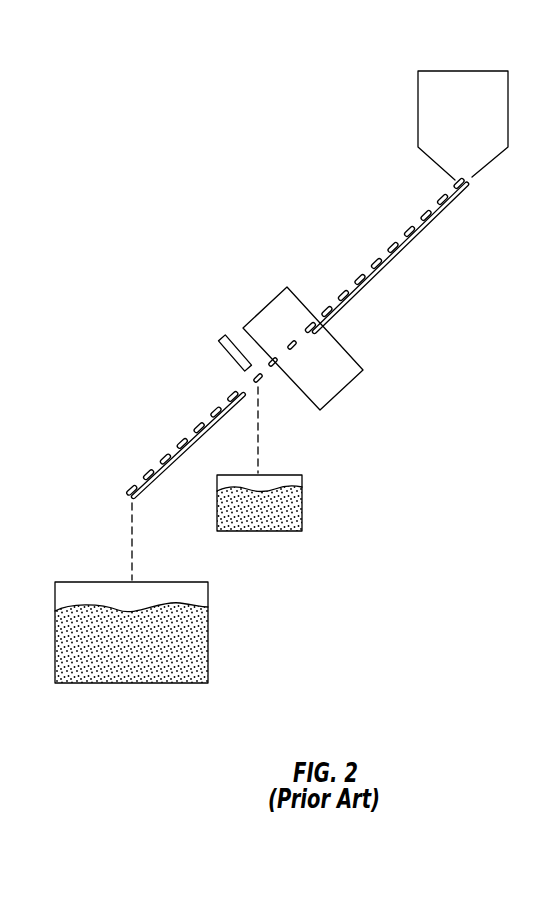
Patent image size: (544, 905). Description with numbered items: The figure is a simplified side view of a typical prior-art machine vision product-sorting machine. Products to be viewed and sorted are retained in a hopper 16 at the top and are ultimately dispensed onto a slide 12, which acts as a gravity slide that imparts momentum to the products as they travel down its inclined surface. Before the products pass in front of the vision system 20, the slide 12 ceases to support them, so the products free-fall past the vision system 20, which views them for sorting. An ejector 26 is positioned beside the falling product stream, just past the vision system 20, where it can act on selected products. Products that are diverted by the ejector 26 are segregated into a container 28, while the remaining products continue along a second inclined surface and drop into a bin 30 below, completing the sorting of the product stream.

The slide 12 is at (423, 233).
The hopper 16 is at (430, 71).
The vision system 20 is at (350, 357).
The ejector 26 is at (222, 340).
The container 28 is at (283, 475).
The bin 30 is at (193, 582).